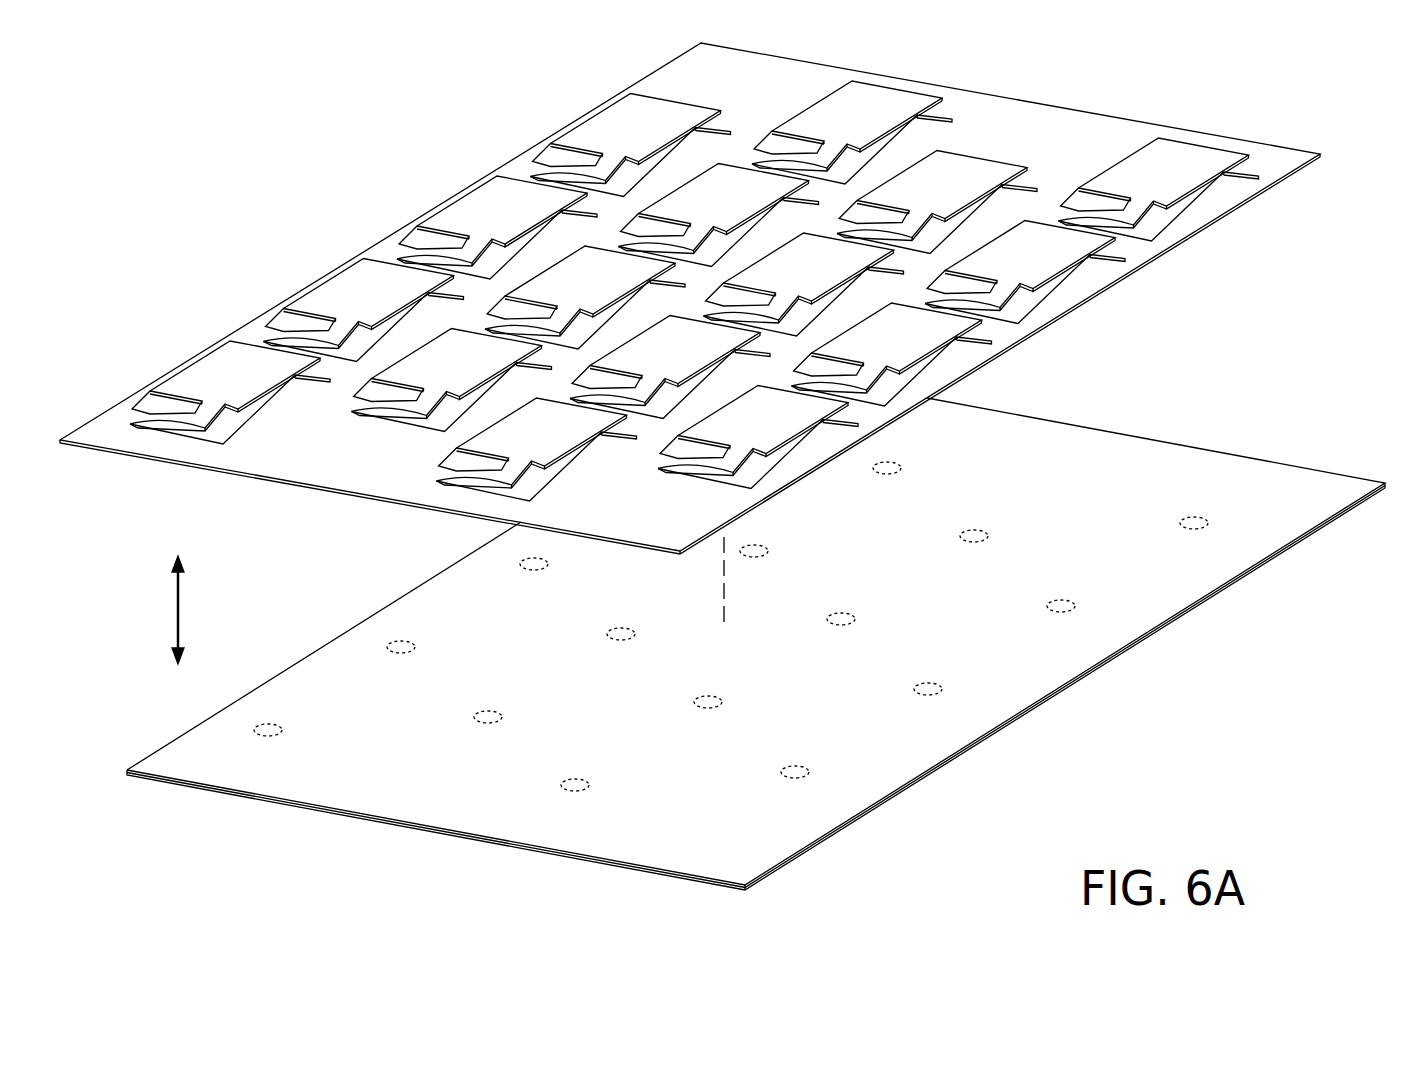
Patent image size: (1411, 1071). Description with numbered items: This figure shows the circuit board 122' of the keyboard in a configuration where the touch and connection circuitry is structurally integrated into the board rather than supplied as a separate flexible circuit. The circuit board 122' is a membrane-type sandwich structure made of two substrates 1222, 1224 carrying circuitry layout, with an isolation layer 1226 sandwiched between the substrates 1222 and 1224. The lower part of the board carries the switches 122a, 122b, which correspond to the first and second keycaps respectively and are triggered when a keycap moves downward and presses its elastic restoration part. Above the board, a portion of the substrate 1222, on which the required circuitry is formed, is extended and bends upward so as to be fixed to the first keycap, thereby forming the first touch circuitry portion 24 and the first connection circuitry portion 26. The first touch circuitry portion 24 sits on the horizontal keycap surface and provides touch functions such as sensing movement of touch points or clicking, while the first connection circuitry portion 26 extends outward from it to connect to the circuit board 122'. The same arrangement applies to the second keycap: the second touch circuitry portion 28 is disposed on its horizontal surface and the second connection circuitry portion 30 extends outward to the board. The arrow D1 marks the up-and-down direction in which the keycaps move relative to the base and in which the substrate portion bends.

The first touch circuitry portion 24 is at (787, 265).
The first connection circuitry portion 26 is at (694, 298).
The second touch circuitry portion 28 is at (653, 344).
The second connection circuitry portion 30 is at (612, 397).
The substrate 1222 is at (1170, 247).
The substrate 1224 is at (1358, 508).
The isolation layer 1226 is at (1238, 466).
The substrate stack 122' is at (766, 581).
The switch 122a is at (857, 614).
The switch 122b is at (725, 697).
The first direction D1 is at (200, 610).